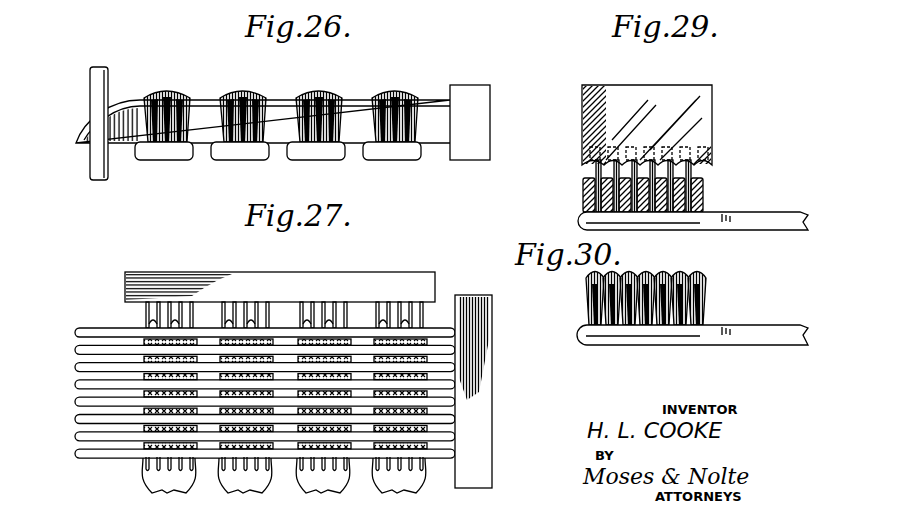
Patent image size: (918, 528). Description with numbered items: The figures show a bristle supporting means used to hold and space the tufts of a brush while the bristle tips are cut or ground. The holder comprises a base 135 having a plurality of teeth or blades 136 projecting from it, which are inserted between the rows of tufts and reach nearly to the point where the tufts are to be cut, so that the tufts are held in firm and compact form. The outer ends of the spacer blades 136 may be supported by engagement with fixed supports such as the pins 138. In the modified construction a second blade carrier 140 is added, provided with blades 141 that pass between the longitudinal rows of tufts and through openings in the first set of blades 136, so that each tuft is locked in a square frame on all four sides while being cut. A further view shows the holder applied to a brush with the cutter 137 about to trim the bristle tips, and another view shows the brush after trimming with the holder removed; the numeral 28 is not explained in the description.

In FIG. 27, the bristle tuft stock 28 is at (126, 446).
In FIG. 26, the base 135 is at (481, 118).
In FIG. 27, the base 135 is at (486, 368).
In FIG. 26, the teeth or blades 136 is at (356, 100).
In FIG. 29, the teeth or blades 136 is at (585, 197).
In FIG. 29, the cutter 137 is at (700, 108).
In FIG. 26, the pins 138 is at (91, 97).
In FIG. 27, the second blade carrier 140 is at (379, 270).
In FIG. 27, the blades 141 is at (142, 315).